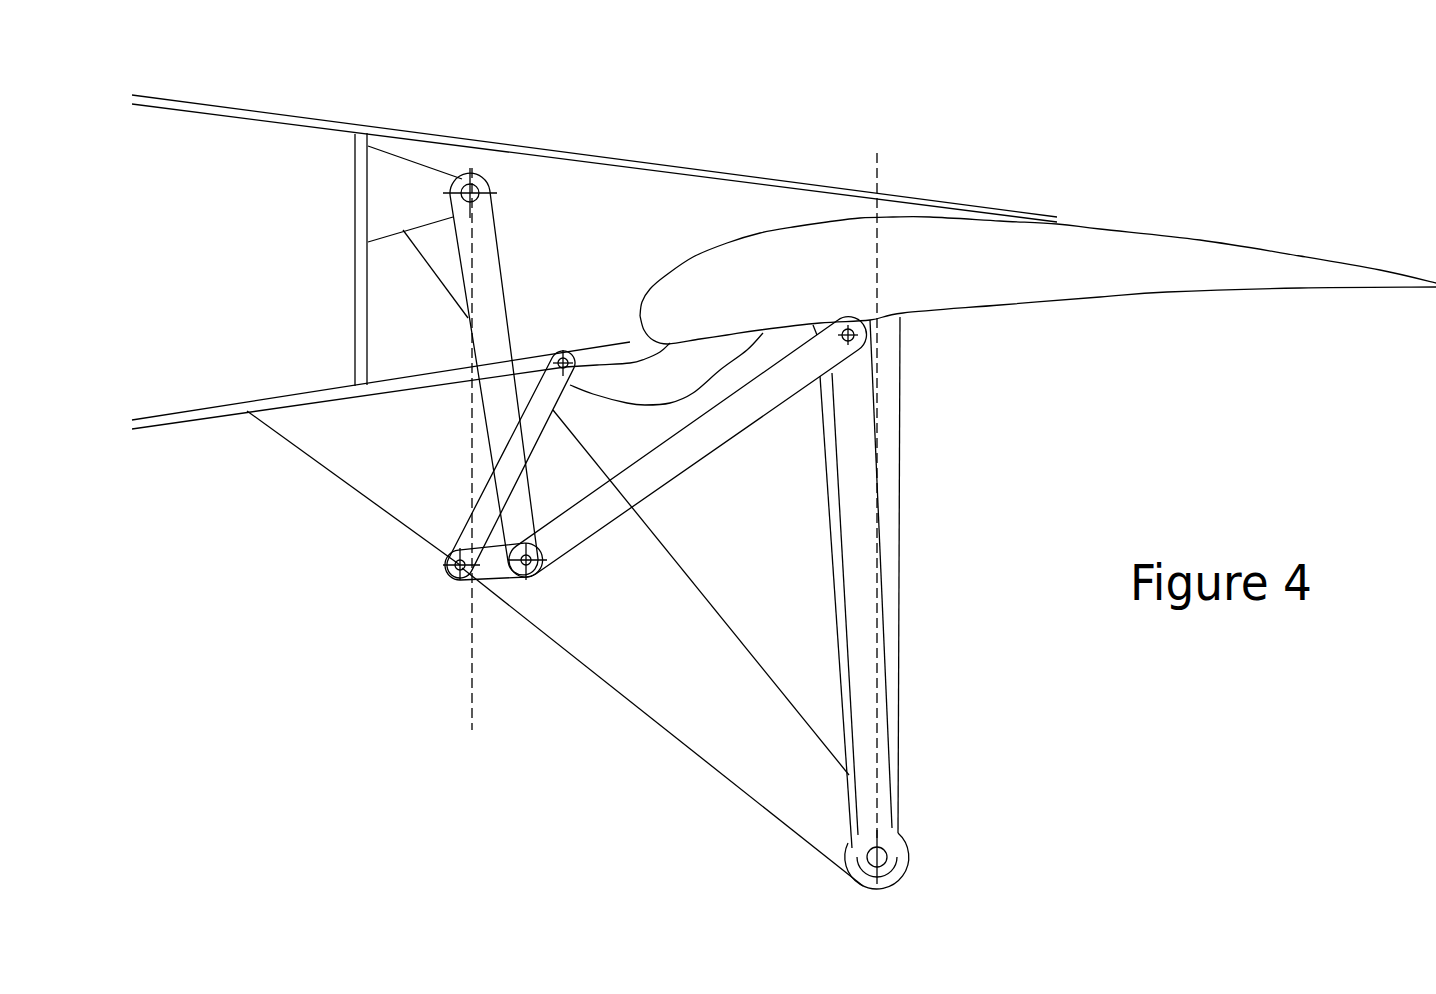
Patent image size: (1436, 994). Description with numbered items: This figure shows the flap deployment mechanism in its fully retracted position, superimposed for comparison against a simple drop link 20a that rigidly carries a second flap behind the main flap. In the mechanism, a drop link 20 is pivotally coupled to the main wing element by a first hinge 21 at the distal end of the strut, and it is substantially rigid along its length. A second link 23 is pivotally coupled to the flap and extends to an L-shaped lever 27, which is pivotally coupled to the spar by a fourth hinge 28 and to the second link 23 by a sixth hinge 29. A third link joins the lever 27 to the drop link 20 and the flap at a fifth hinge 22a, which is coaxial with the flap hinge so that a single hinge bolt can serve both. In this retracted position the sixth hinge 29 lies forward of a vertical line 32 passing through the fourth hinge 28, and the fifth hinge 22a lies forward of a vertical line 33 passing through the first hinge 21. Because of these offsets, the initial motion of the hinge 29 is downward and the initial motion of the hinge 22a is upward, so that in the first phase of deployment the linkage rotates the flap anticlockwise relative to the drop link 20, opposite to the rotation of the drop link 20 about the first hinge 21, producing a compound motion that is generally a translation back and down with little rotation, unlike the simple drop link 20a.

The drop link 20 is at (876, 540).
The simple drop link 20a is at (900, 428).
The first hinge 21 is at (847, 857).
The fifth hinge 22a is at (851, 330).
The second link 23 is at (508, 477).
The L-shaped lever 27 is at (497, 290).
The fourth hinge 28 is at (474, 187).
The sixth hinge 29 is at (456, 570).
The vertical line 32 is at (477, 695).
The vertical line 33 is at (880, 176).